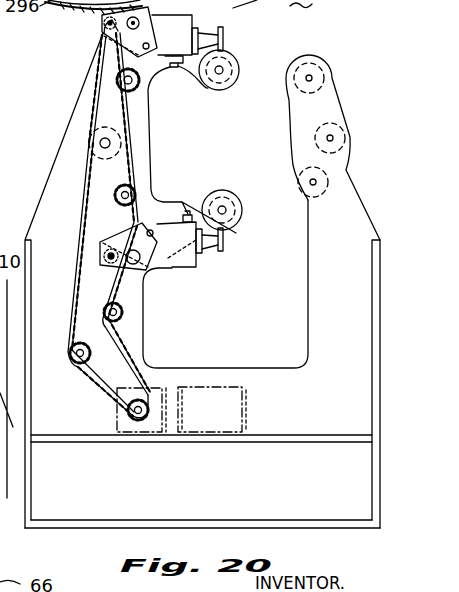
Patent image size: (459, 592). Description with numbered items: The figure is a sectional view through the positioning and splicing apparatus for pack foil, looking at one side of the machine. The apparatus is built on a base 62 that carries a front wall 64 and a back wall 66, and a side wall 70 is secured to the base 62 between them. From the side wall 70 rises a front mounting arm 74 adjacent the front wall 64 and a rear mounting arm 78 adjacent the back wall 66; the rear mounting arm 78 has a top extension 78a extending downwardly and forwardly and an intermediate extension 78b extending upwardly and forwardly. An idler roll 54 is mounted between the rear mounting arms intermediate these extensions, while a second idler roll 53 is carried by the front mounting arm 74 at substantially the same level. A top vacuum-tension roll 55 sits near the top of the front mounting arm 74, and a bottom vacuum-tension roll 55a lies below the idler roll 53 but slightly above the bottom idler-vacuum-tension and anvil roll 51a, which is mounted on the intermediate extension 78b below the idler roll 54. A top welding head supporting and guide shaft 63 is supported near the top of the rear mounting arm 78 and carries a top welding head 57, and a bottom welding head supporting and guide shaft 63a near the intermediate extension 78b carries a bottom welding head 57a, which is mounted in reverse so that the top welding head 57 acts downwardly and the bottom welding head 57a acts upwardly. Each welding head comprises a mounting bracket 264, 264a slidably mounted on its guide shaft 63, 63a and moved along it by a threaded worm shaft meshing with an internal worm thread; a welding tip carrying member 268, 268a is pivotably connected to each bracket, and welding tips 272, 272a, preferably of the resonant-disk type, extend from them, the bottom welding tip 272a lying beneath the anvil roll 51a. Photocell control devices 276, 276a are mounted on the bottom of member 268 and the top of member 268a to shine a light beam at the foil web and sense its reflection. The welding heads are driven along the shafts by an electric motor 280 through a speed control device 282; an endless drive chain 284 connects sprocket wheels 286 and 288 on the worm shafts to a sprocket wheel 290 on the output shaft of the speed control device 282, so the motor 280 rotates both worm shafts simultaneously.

The base 62 is at (118, 520).
The front wall 64 is at (372, 287).
The back wall 66 is at (31, 268).
The side wall 70 is at (276, 366).
The front mounting arm 74 is at (347, 171).
The rear mounting arm 78 is at (72, 136).
The top extension 78a is at (192, 90).
The intermediate extension 78b is at (183, 202).
The idler roll 54 is at (118, 160).
The top vacuum-tension roll 55 is at (322, 80).
The bottom vacuum-tension roll 55a is at (303, 169).
The idler roll 53 is at (335, 125).
The bottom idler-vacuum-tension and anvil roll 51a is at (243, 203).
The top welding head 57 is at (226, 32).
The bottom welding head 57a is at (204, 272).
The top welding head supporting and guide shaft 63 is at (101, 20).
The bottom welding head supporting and guide shaft 63a is at (145, 290).
The mounting bracket 264 is at (150, 9).
The mounting bracket 264a is at (142, 260).
The welding tip carrying member 268 is at (192, 22).
The welding tip carrying member 268a is at (200, 258).
The top welding tip 272 is at (227, 46).
The bottom welding tip 272a is at (228, 239).
The photocell control device 276 is at (173, 68).
The photocell control device 276a is at (190, 190).
The electric motor 280 is at (243, 418).
The speed control device 282 is at (154, 432).
The endless drive chain 284 is at (80, 233).
The sprocket wheel 286 is at (104, 29).
The sprocket wheel 288 is at (111, 250).
The sprocket wheel 290 is at (120, 410).